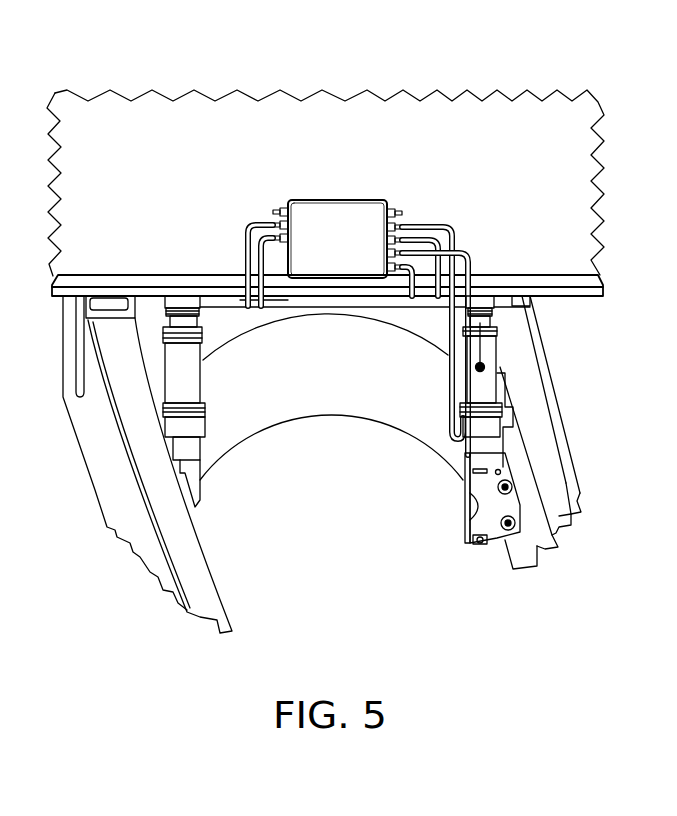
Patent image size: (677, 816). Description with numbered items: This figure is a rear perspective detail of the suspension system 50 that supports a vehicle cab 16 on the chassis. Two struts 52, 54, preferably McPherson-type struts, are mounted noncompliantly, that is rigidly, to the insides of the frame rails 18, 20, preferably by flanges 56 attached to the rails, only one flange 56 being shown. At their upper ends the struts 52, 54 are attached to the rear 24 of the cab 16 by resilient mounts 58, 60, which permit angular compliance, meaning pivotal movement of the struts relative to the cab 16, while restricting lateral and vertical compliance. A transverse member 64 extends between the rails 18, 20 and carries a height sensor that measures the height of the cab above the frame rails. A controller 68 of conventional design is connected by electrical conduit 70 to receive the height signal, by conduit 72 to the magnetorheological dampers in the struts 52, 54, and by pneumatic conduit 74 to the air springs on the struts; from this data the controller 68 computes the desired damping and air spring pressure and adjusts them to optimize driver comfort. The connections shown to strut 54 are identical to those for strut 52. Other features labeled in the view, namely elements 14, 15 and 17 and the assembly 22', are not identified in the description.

The hoses 14 is at (246, 239).
The lower bracket flange 15 is at (517, 524).
The cab 16 is at (106, 122).
The sensor 17 is at (486, 367).
The frame rail 18 is at (205, 568).
The frame rail 20 is at (563, 478).
The frame assembly 22' is at (288, 589).
The rear of the cab 24 is at (291, 145).
The suspension system 50 is at (402, 192).
The strut 52 is at (202, 381).
The strut 54 is at (470, 484).
The flange 56 is at (530, 511).
The resilient mount 58 is at (180, 303).
The resilient mount 60 is at (488, 299).
The transverse member 64 is at (364, 419).
The controller 68 is at (355, 247).
The electrical conduit 70 is at (432, 224).
The conduit 72 is at (469, 260).
The pneumatic conduit 74 is at (368, 317).